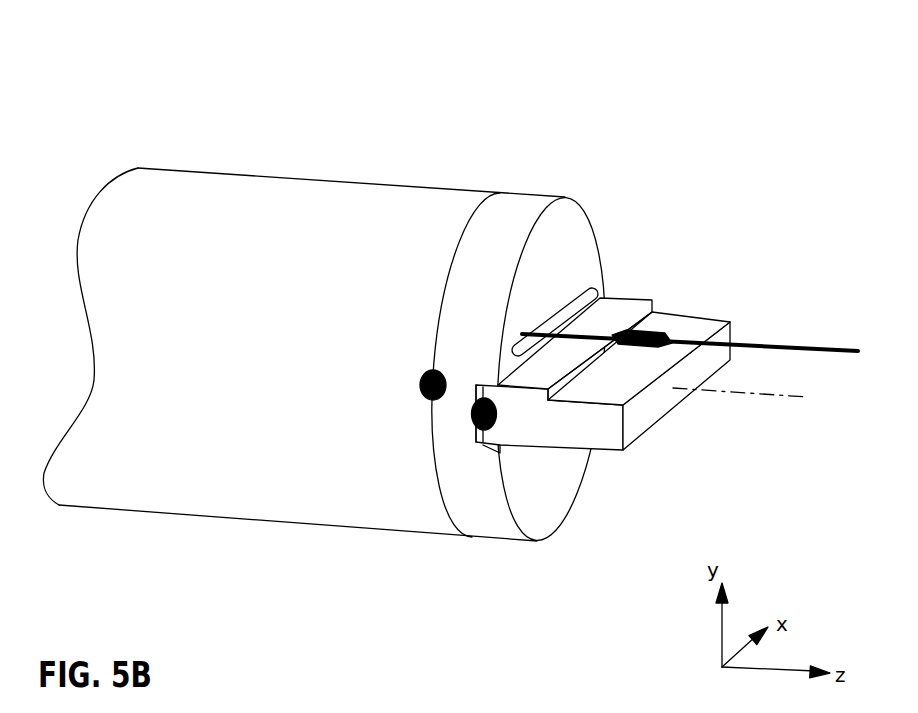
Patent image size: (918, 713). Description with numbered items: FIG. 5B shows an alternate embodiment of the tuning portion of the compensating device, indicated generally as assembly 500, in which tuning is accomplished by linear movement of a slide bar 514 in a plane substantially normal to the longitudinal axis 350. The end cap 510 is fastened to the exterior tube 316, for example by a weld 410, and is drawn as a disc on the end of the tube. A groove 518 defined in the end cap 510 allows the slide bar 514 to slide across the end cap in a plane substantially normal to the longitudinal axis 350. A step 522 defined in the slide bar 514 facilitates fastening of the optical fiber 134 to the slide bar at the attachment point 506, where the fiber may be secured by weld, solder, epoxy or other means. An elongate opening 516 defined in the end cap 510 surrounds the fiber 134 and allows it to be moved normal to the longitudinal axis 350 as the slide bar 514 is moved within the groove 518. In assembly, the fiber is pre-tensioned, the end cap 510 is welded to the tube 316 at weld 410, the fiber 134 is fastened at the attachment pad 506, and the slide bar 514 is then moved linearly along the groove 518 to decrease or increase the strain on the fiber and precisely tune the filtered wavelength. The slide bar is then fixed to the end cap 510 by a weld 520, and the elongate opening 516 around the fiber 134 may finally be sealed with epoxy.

The fiber mounting assembly 500 is at (652, 80).
The exterior tube 316 is at (262, 181).
The end cap 510 is at (500, 238).
The elongate opening 516 is at (560, 302).
The attachment point 506 is at (660, 312).
The optical fiber 134 is at (772, 340).
The longitudinal axis 350 is at (752, 392).
The slide bar 514 is at (647, 412).
The step 522 is at (573, 378).
The groove 518 is at (490, 452).
The weld 410 is at (418, 391).
The weld 520 is at (474, 426).